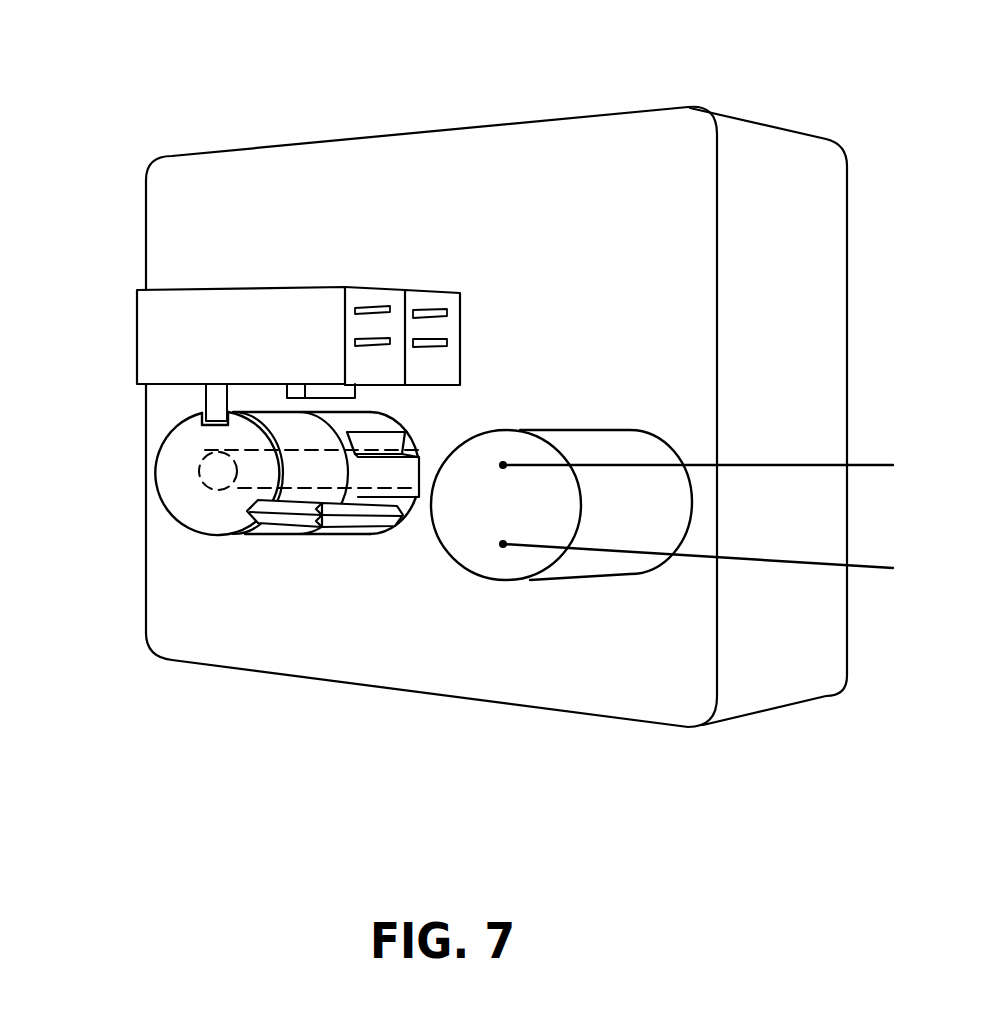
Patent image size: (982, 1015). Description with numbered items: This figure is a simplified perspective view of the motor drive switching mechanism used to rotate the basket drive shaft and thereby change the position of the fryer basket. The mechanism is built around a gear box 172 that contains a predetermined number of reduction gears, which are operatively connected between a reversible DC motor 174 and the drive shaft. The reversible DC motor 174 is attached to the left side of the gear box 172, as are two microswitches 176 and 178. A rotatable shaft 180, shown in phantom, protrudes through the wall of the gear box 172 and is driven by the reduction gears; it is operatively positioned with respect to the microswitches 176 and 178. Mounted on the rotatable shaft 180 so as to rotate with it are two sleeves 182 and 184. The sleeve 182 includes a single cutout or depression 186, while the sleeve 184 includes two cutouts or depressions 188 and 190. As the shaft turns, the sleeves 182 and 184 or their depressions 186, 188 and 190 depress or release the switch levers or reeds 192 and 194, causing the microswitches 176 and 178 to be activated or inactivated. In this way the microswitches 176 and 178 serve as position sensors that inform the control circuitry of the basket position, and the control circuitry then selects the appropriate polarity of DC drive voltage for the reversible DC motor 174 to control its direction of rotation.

The gear box 172 is at (490, 148).
The reversible DC motor 174 is at (472, 548).
The microswitch 176 is at (432, 302).
The microswitch 178 is at (302, 308).
The rotatable shaft 180 is at (200, 467).
The sleeve 182 is at (350, 527).
The sleeve 184 is at (197, 513).
The cutout or depression 186 is at (207, 410).
The cutout or depression 188 is at (405, 437).
The cutout or depression 190 is at (280, 518).
The switch lever or reed 192 is at (322, 388).
The switch lever or reed 194 is at (235, 385).